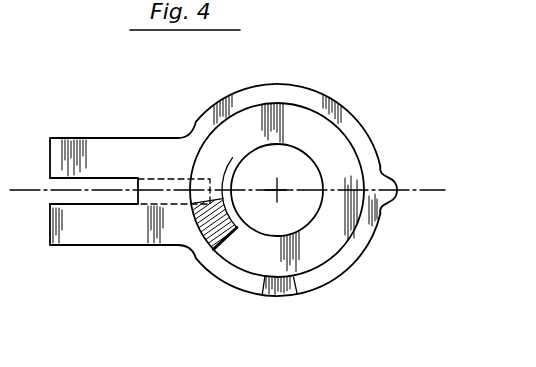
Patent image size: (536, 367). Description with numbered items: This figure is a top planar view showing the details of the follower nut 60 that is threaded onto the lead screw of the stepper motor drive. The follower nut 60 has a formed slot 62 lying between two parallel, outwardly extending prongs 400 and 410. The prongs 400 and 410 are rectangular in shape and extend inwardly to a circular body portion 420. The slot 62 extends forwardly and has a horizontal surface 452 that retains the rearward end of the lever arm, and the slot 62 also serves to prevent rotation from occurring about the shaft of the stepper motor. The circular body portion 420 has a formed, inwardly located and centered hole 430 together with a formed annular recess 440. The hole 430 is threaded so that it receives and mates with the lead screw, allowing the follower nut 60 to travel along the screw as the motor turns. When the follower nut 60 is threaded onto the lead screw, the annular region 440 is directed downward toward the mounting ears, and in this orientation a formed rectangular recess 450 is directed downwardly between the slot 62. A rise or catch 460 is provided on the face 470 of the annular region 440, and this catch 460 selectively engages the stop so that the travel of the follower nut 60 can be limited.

The follower nut 60 is at (303, 68).
The prong 400 is at (97, 155).
The prong 410 is at (117, 223).
The circular body portion 420 is at (353, 116).
The hole 430 is at (313, 220).
The annular recess 440 is at (299, 297).
The rectangular recess 450 is at (181, 178).
The horizontal surface 452 is at (153, 180).
The rise or catch 460 is at (234, 244).
The face 470 is at (335, 163).
The slot 62 is at (90, 206).